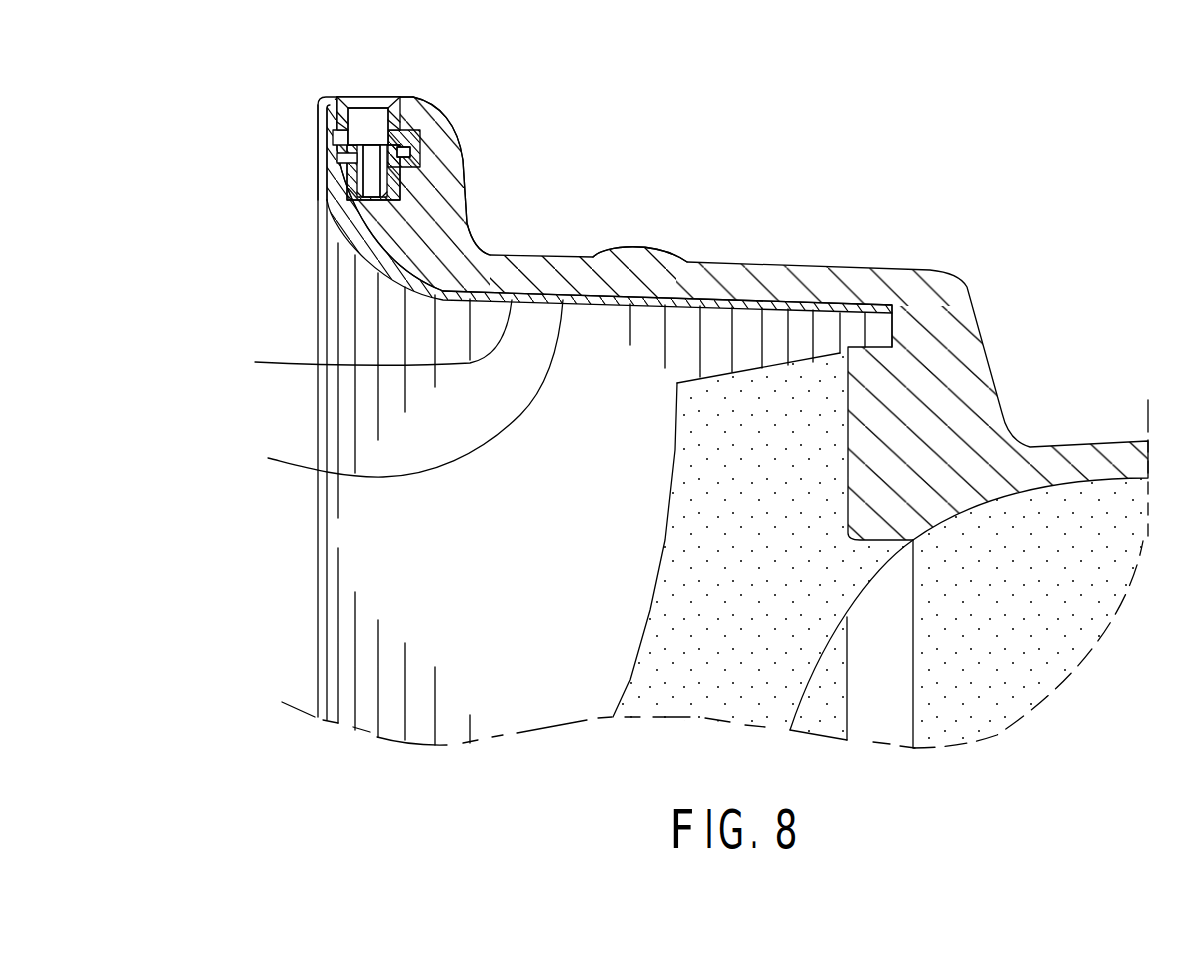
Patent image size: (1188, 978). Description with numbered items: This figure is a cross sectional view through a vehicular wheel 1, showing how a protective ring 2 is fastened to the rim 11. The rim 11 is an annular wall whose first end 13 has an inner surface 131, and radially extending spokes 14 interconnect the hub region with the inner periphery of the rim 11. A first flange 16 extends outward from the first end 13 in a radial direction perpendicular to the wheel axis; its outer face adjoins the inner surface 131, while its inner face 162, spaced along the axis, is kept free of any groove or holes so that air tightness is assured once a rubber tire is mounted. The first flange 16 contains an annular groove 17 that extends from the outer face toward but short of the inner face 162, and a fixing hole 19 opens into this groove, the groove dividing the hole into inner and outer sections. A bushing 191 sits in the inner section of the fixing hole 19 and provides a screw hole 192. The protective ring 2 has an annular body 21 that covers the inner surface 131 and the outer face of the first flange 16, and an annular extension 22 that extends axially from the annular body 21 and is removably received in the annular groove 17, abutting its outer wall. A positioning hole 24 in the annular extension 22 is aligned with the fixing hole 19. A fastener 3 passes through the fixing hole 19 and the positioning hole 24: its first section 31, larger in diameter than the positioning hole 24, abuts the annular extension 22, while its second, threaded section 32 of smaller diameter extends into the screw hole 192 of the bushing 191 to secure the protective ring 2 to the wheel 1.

The wheel 1 is at (910, 268).
The rim 11 is at (1072, 459).
The first end 13 is at (633, 260).
The spokes 14 is at (690, 692).
The inner surface 131 is at (359, 339).
The first flange 16 is at (413, 110).
The inner face 162 is at (421, 149).
The annular groove 17 is at (343, 158).
The fixing hole 19 is at (400, 121).
The bushing 191 is at (395, 185).
The screw hole 192 is at (348, 202).
The protective ring 2 is at (304, 566).
The annular body 21 is at (399, 388).
The annular extension 22 is at (421, 156).
The positioning hole 24 is at (373, 143).
The fastener 3 is at (364, 120).
The first section 31 is at (356, 104).
The second, threaded section 32 is at (370, 170).